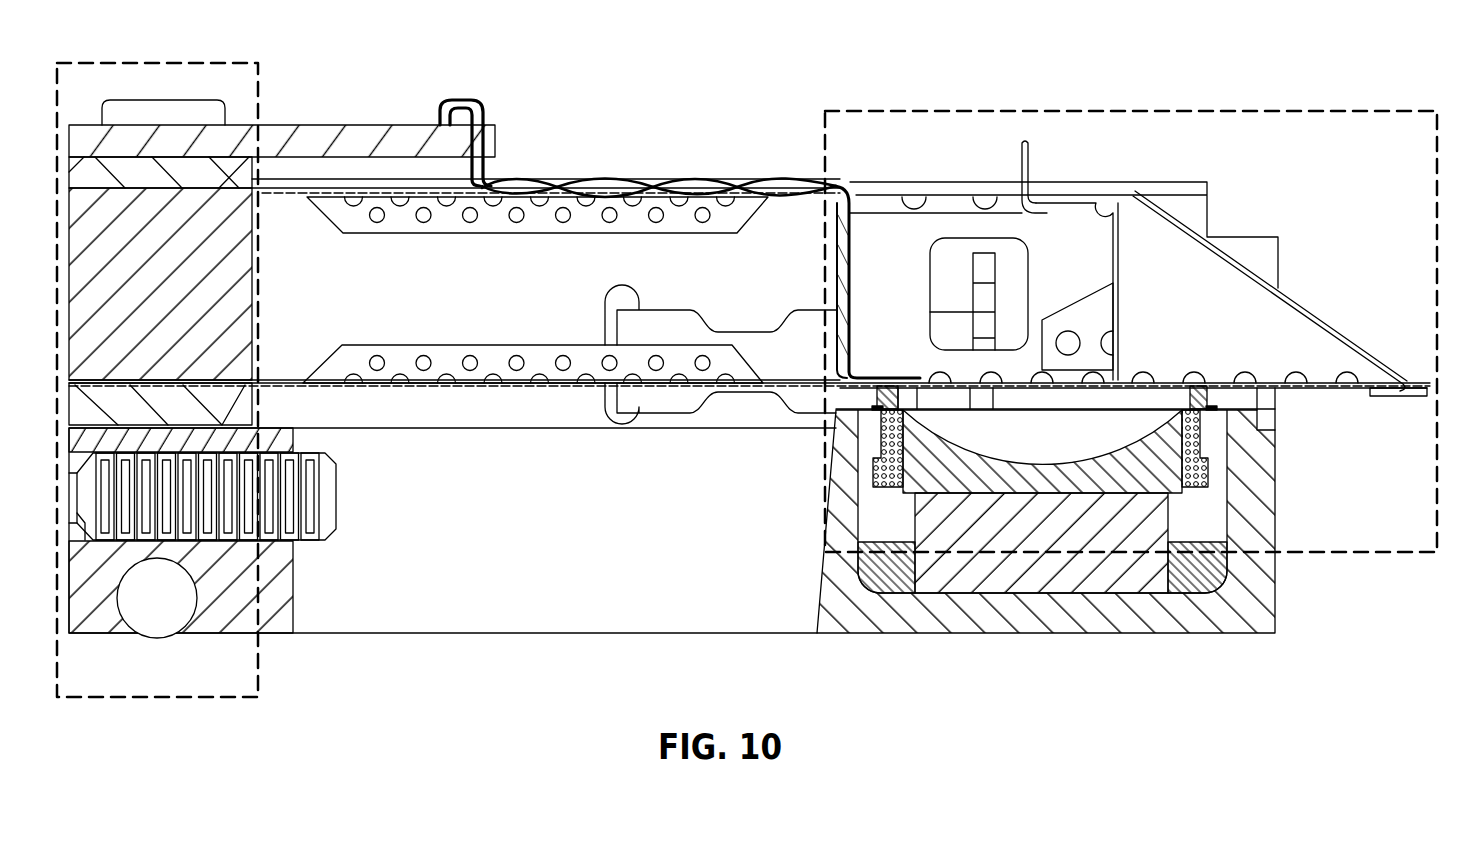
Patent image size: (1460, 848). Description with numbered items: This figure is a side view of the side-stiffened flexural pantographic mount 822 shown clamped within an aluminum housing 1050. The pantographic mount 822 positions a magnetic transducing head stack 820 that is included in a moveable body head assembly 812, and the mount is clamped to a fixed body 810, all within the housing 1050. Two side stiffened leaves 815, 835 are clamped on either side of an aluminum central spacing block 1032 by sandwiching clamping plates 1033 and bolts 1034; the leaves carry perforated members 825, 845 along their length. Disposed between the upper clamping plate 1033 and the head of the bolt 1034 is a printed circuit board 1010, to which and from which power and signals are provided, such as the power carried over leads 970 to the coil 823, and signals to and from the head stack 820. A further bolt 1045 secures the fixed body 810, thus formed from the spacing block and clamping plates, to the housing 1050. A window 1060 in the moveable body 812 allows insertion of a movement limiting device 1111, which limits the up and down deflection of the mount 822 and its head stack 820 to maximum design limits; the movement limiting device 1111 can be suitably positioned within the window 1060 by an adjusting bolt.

The fixed body 810 is at (232, 62).
The moveable body head assembly 812 is at (1137, 112).
The clamping plates 1033 is at (205, 168).
The bolts 1034 is at (160, 100).
The central spacing block 1032 is at (222, 274).
The side stiffened leaf 815 is at (290, 199).
The side stiffened leaf 835 is at (280, 378).
The upper perforated member 825 is at (508, 235).
The lower perforated member 845 is at (468, 345).
The printed circuit board 1010 is at (417, 123).
The leads 970 is at (558, 185).
The side-stiffened flexural pantographic mount 822 is at (712, 138).
The window 1060 is at (1015, 270).
The movement limiting device 1111 is at (982, 302).
The magnetic transducing head stack 820 is at (1416, 383).
The coil 823 is at (1207, 468).
The housing 1050 is at (545, 617).
The bolt 1045 is at (87, 523).